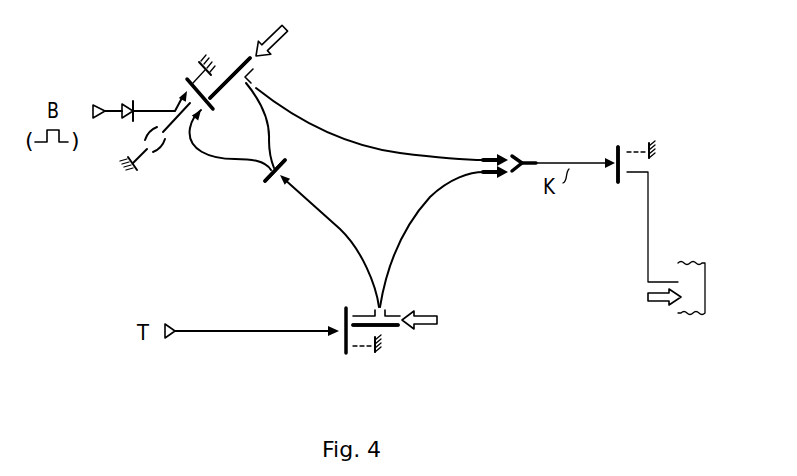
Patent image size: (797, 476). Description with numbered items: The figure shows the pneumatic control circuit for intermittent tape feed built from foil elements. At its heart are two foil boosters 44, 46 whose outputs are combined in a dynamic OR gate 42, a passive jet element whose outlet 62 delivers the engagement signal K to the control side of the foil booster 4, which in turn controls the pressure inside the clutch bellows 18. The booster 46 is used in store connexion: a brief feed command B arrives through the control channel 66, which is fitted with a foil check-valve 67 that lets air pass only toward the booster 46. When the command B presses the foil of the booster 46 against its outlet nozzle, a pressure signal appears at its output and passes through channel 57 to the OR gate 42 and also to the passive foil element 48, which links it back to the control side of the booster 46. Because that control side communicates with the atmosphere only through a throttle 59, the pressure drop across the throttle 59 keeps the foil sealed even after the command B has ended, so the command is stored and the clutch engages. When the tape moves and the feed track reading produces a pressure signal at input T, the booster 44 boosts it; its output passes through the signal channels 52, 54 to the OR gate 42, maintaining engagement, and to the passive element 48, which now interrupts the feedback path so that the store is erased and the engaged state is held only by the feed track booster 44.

The foil booster 4 is at (636, 148).
The clutch bellows 18 is at (686, 304).
The dynamic OR gate 42 is at (508, 149).
The foil booster 44 is at (419, 338).
The foil booster 46 is at (255, 34).
The passive foil element 48 is at (292, 168).
The signal channel 52 is at (432, 239).
The signal channel 54 is at (329, 241).
The channel 57 is at (370, 124).
The throttle 59 is at (164, 150).
The outlet 62 is at (537, 161).
The control channel 66 is at (137, 104).
The foil check-valve 67 is at (121, 122).